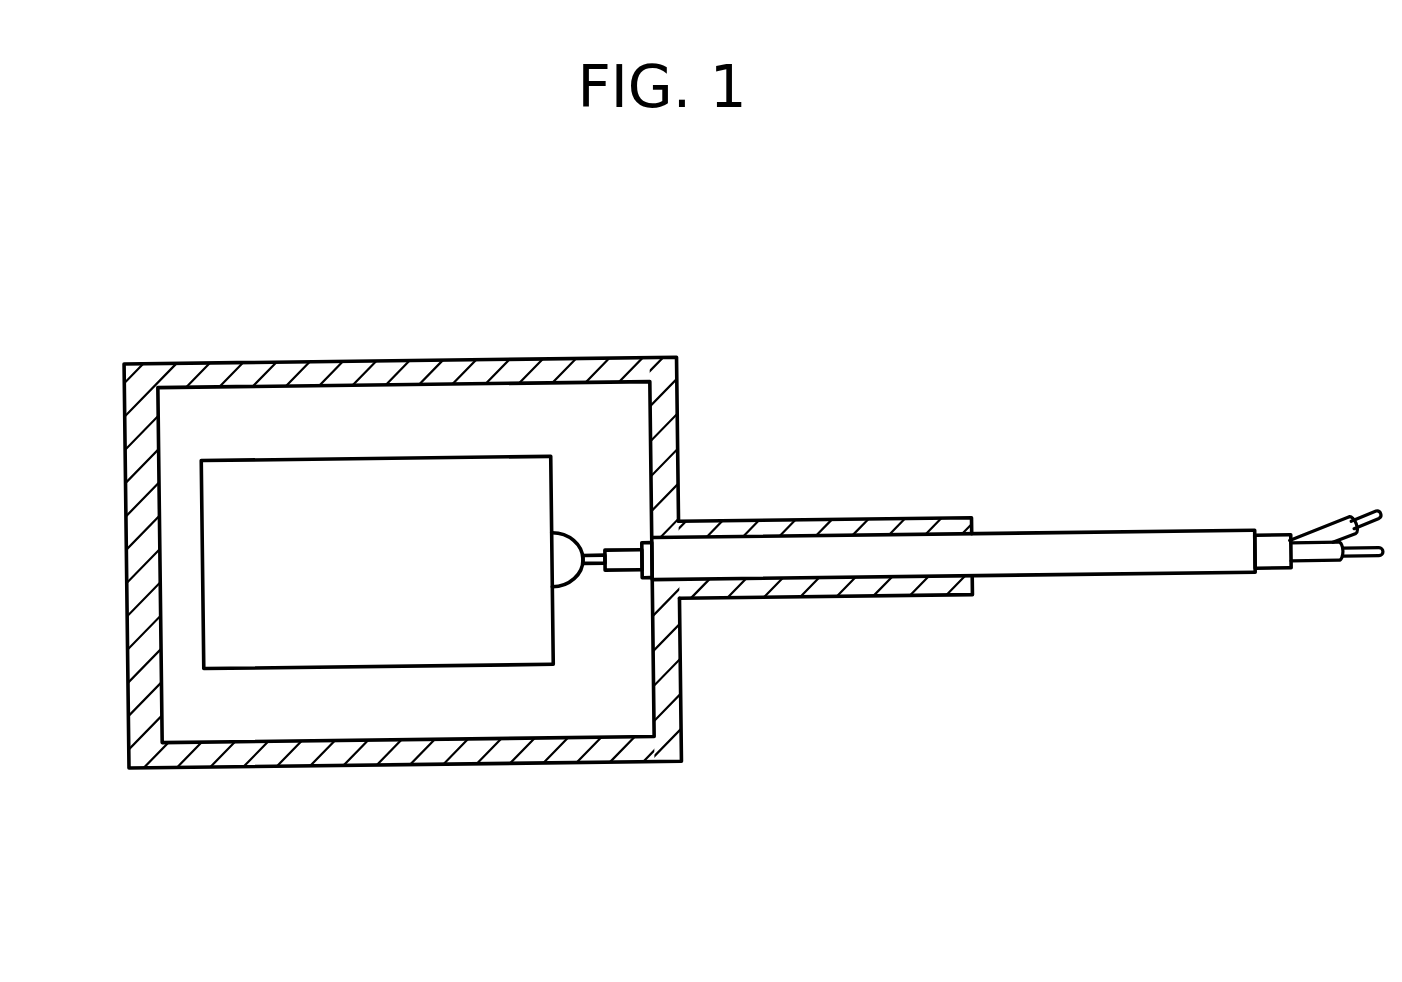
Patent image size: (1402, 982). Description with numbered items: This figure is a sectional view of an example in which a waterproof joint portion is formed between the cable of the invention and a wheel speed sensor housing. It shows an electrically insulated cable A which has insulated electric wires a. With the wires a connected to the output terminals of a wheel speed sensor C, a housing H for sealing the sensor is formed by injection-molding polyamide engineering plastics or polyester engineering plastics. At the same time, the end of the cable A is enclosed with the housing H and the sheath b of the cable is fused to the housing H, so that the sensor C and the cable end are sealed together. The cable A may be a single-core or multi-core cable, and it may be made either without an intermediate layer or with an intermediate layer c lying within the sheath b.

The housing H is at (670, 703).
The wheel speed sensor C is at (442, 444).
The electrically insulated cable A is at (1017, 536).
The sheath b is at (1042, 567).
The intermediate layer c is at (1270, 559).
The insulated electric wires a is at (1343, 530).